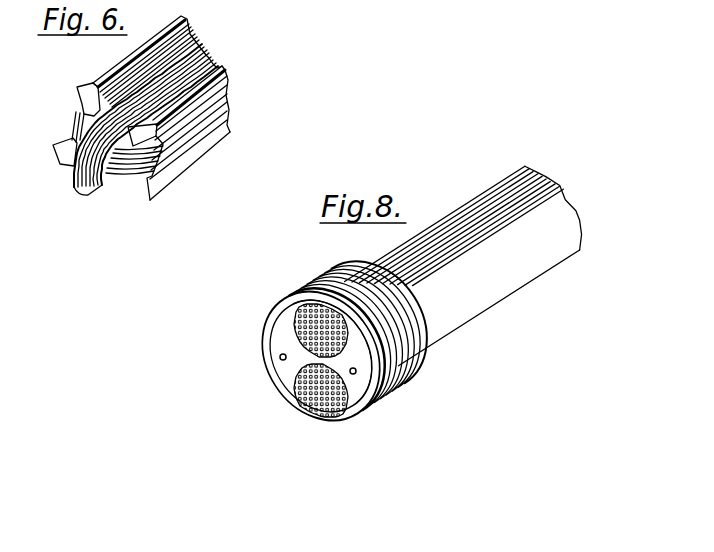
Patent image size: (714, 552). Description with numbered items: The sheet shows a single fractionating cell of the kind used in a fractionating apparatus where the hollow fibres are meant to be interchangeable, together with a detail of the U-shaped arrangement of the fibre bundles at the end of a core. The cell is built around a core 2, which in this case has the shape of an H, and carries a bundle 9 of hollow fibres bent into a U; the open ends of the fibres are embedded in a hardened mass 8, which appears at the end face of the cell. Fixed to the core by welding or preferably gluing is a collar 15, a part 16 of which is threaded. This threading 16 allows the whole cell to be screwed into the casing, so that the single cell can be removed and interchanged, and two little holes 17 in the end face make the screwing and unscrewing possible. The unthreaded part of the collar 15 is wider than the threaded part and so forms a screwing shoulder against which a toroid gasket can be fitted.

The core 2 is at (281, 373).
The hardened mass 8 is at (303, 397).
The bundle of hollow fibres 9 is at (518, 207).
The collar 15 is at (378, 398).
The threaded part 16 is at (403, 383).
The little holes 17 is at (279, 356).